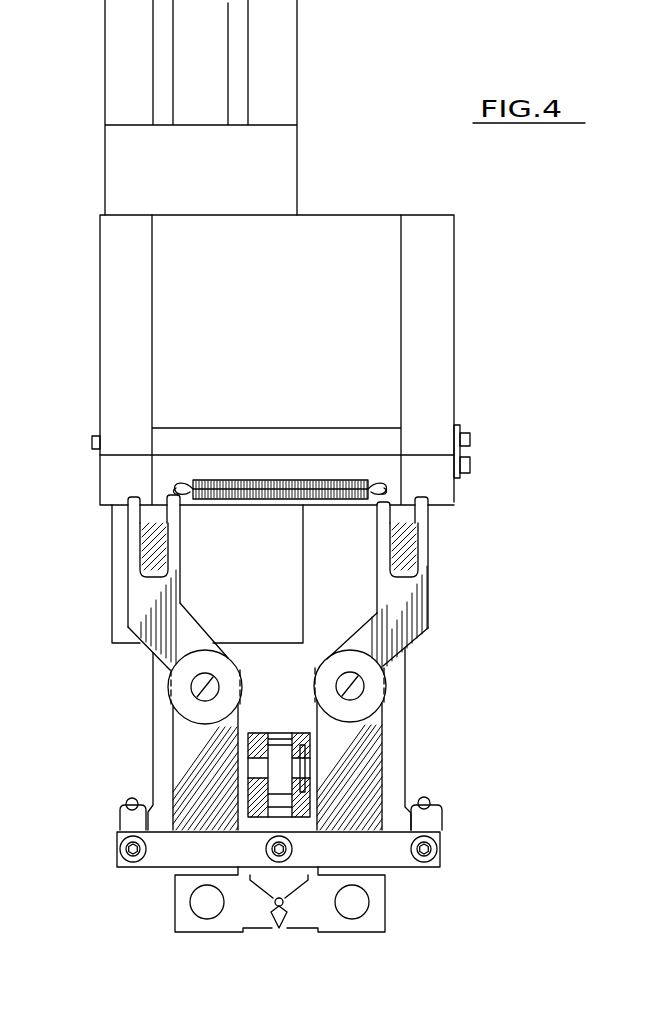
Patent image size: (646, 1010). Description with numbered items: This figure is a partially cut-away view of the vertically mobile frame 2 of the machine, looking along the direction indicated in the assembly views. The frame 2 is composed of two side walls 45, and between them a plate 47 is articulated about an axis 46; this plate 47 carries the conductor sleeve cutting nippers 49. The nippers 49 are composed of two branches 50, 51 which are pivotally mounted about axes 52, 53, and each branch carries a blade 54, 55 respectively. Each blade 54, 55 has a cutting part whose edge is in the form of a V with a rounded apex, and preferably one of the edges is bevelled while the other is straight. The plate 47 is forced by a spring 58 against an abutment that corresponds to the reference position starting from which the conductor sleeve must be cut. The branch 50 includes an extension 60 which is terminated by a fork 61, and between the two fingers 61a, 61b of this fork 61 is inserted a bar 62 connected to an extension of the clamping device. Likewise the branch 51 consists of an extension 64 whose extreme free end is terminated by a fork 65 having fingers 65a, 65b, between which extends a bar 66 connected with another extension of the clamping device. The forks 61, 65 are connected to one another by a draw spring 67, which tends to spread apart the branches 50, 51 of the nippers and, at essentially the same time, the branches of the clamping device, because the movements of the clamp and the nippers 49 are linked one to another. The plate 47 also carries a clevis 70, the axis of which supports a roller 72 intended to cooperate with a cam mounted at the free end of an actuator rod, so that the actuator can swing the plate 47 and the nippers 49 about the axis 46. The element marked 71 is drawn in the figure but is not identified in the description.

The vertically mobile frame 2 is at (468, 307).
The side walls 45 is at (435, 346).
The axis 46 is at (470, 440).
The plate 47 is at (358, 579).
The conductor sleeve cutting nippers 49 is at (421, 690).
The branch 50 is at (378, 745).
The branch 51 is at (175, 745).
The axis 52 is at (340, 686).
The axis 53 is at (195, 690).
The blade 54 is at (305, 915).
The blade 55 is at (262, 918).
The spring 58 is at (432, 790).
The extension 60 is at (420, 612).
The fork 61 is at (378, 506).
The finger 61a is at (425, 520).
The finger 61b is at (387, 495).
The bar 62 is at (405, 545).
The extension 64 is at (172, 596).
The fork 65 is at (178, 510).
The finger 65a is at (133, 518).
The finger 65b is at (170, 492).
The bar 66 is at (150, 555).
The draw spring 67 is at (293, 480).
The clevis 70 is at (258, 815).
The slot 71 is at (300, 765).
The roller 72 is at (278, 750).